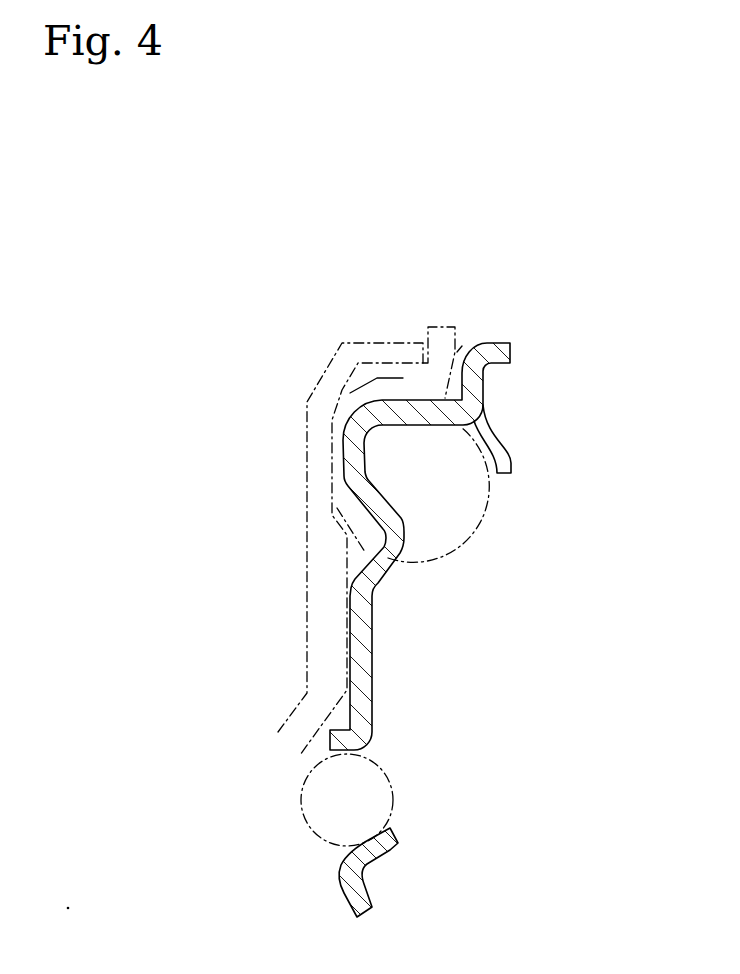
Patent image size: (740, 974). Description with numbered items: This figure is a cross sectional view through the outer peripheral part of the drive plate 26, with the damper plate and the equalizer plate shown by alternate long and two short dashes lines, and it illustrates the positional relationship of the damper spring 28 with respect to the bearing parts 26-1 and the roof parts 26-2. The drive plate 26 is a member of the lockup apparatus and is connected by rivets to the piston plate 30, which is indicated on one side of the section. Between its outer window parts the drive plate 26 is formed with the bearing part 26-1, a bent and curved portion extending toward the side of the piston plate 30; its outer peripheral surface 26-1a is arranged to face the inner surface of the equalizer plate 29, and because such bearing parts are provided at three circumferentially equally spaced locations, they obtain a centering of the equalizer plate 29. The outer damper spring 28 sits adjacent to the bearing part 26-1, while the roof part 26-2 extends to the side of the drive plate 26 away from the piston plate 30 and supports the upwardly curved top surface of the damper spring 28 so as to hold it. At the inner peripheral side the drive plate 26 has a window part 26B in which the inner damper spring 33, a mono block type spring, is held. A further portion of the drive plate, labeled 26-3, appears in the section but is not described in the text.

The drive plate 26 is at (372, 624).
The bearing part 26-1 is at (346, 463).
The outer peripheral surface 26-1a is at (410, 400).
The roof part 26-2 is at (512, 461).
The seal cylindrical portion 26-3 is at (372, 680).
The window part 26B is at (368, 826).
The damper spring 28 is at (486, 517).
The equalizer plate 29 is at (462, 346).
The piston plate 30 is at (307, 420).
The damper spring 33 is at (393, 775).